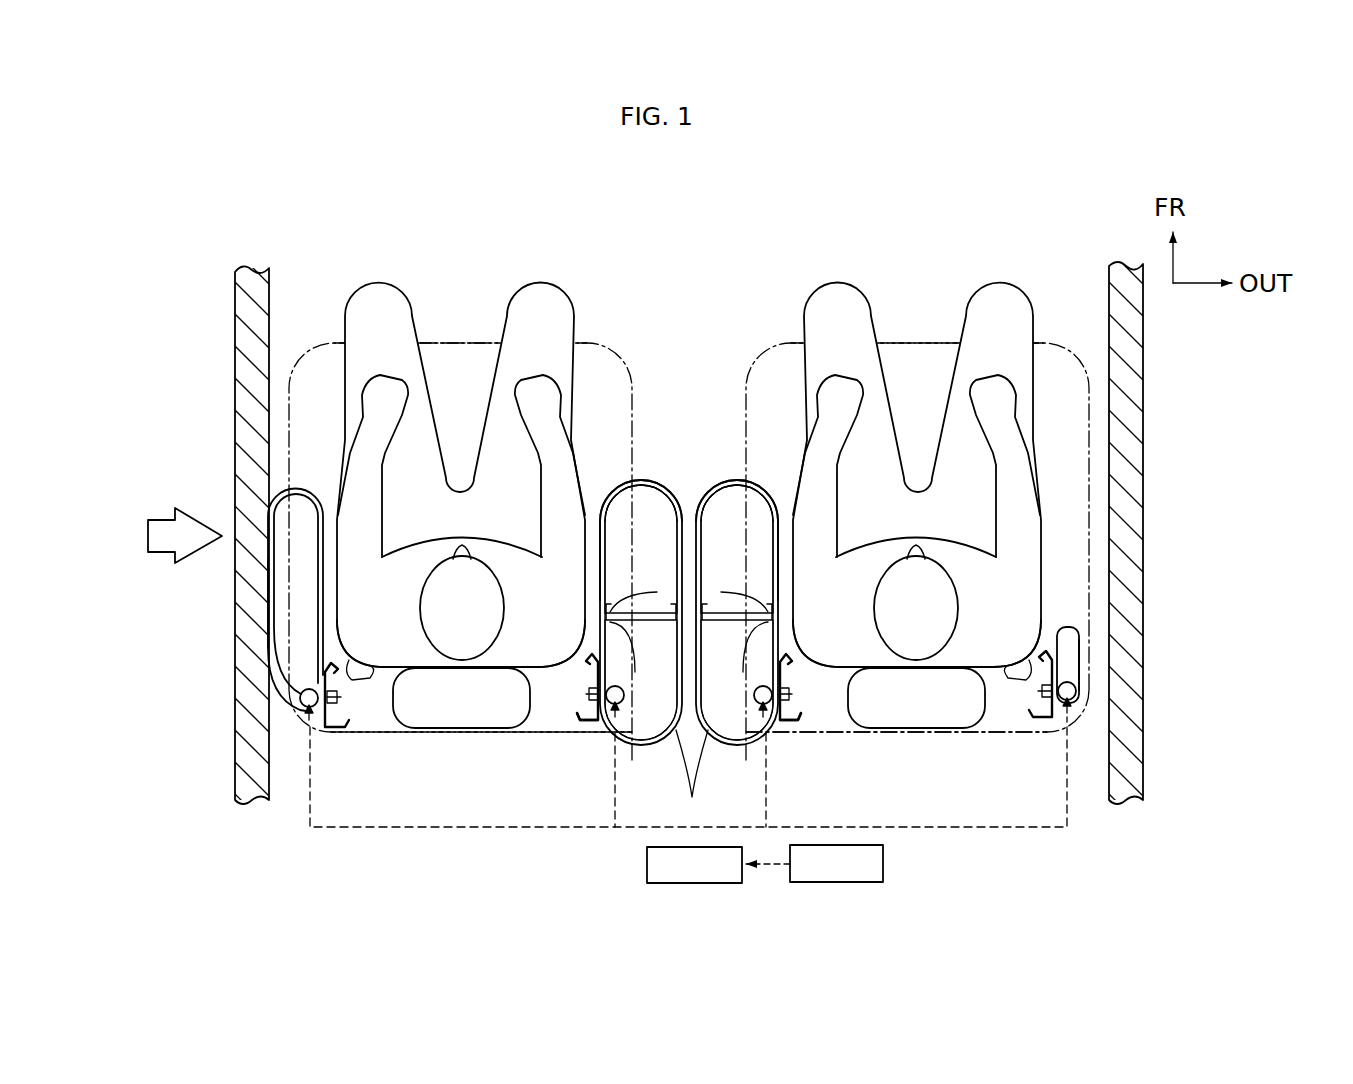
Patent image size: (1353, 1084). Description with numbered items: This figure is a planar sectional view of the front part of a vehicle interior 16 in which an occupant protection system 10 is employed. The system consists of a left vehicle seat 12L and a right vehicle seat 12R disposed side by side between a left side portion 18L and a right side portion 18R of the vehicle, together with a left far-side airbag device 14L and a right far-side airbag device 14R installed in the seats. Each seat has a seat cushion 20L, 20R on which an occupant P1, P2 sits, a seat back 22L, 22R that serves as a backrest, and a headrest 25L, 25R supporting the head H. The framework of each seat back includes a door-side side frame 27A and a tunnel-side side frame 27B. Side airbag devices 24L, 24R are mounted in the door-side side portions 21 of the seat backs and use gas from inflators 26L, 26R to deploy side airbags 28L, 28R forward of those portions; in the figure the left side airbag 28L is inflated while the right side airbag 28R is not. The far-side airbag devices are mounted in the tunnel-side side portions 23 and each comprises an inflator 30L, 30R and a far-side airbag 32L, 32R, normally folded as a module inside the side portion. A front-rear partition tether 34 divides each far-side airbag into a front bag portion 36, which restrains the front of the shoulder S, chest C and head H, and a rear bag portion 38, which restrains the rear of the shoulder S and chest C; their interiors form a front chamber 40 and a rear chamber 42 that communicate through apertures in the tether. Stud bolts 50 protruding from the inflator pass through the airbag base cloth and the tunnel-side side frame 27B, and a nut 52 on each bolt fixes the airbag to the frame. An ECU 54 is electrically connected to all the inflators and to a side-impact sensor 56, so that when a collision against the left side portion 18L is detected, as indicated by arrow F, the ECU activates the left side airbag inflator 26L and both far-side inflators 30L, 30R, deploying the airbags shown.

The occupant protection system 10 is at (688, 268).
The left vehicle seat 12L is at (629, 338).
The right vehicle seat 12R is at (749, 338).
The left far-side airbag device 14L is at (654, 440).
The right far-side airbag device 14R is at (721, 440).
The vehicle interior 16 is at (701, 331).
The left side portion 18L is at (238, 349).
The right side portion 18R is at (1145, 350).
The left seat cushion 20L is at (462, 342).
The right seat cushion 20R is at (916, 342).
The door-side side portion 21 is at (350, 640).
The left seat back 22L is at (512, 733).
The right seat back 22R is at (860, 732).
The tunnel-side side portion 23 is at (590, 646).
The left side airbag device 24L is at (310, 478).
The right side airbag device 24R is at (1066, 620).
The left headrest 25L is at (458, 729).
The right headrest 25R is at (918, 728).
The left side airbag inflator 26L is at (300, 715).
The right side airbag inflator 26R is at (1075, 692).
The door-side side frame 27A is at (333, 730).
The tunnel-side side frame 27B is at (590, 725).
The left side airbag 28L is at (267, 614).
The right side airbag 28R is at (1082, 643).
The left far-side inflator 30L is at (632, 742).
The right far-side inflator 30R is at (756, 742).
The left far-side airbag 32L is at (613, 482).
The right far-side airbag 32R is at (762, 480).
The front-rear partition tether 34 is at (610, 597).
The front bag portion 36 is at (598, 537).
The rear bag portion 38 is at (695, 846).
The front chamber 40 is at (670, 557).
The rear chamber 42 is at (670, 691).
The stud bolt 50 is at (604, 698).
The nut 52 is at (592, 680).
The ECU 54 is at (647, 864).
The side-impact sensor 56 is at (883, 862).
The occupant P1 is at (375, 279).
The occupant P2 is at (835, 279).
The head part H is at (420, 612).
The chest part C is at (422, 535).
The shoulder part S is at (690, 691).
The side collision force arrow F is at (160, 557).